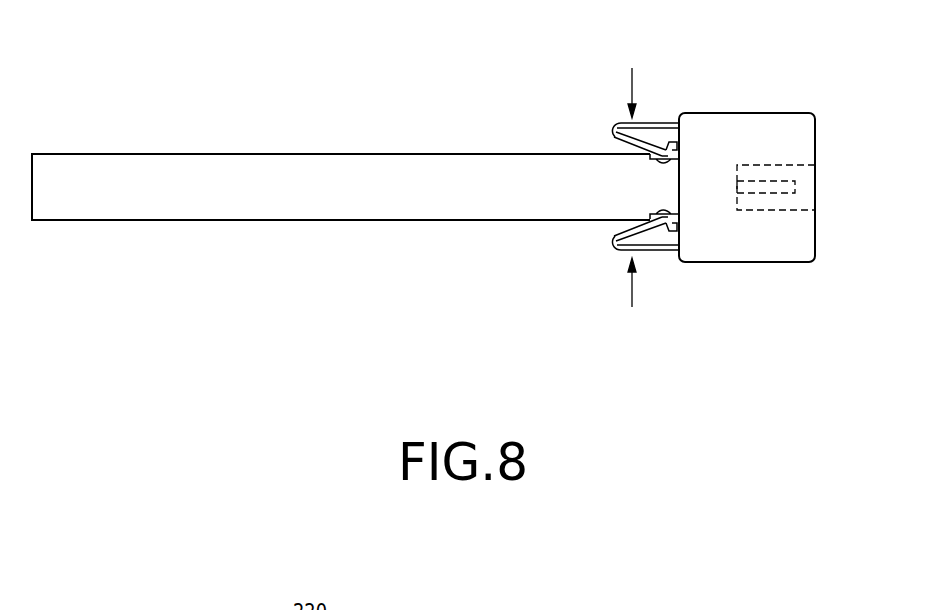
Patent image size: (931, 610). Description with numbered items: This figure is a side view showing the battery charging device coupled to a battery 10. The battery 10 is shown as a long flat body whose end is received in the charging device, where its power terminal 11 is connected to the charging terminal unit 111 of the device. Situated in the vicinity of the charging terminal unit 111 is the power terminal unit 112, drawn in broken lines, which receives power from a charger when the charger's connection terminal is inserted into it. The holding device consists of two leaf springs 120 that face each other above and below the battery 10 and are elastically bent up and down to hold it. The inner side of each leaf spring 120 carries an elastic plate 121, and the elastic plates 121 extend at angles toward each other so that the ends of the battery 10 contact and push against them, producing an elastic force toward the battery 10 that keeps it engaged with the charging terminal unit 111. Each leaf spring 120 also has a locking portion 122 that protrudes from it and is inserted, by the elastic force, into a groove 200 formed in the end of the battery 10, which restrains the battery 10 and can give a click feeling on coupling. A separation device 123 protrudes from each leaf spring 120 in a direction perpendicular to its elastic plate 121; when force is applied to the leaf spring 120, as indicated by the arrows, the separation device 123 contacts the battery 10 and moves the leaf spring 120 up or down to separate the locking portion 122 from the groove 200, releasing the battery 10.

The battery 10 is at (378, 168).
The power terminal 11 is at (679, 186).
The charging terminal unit 111 is at (679, 186).
The power terminal unit 112 is at (802, 190).
The leaf spring 120 is at (650, 127).
The elastic plate 121 is at (615, 131).
The locking portion 122 is at (655, 143).
The separation device 123 is at (613, 152).
The groove 200 is at (678, 160).